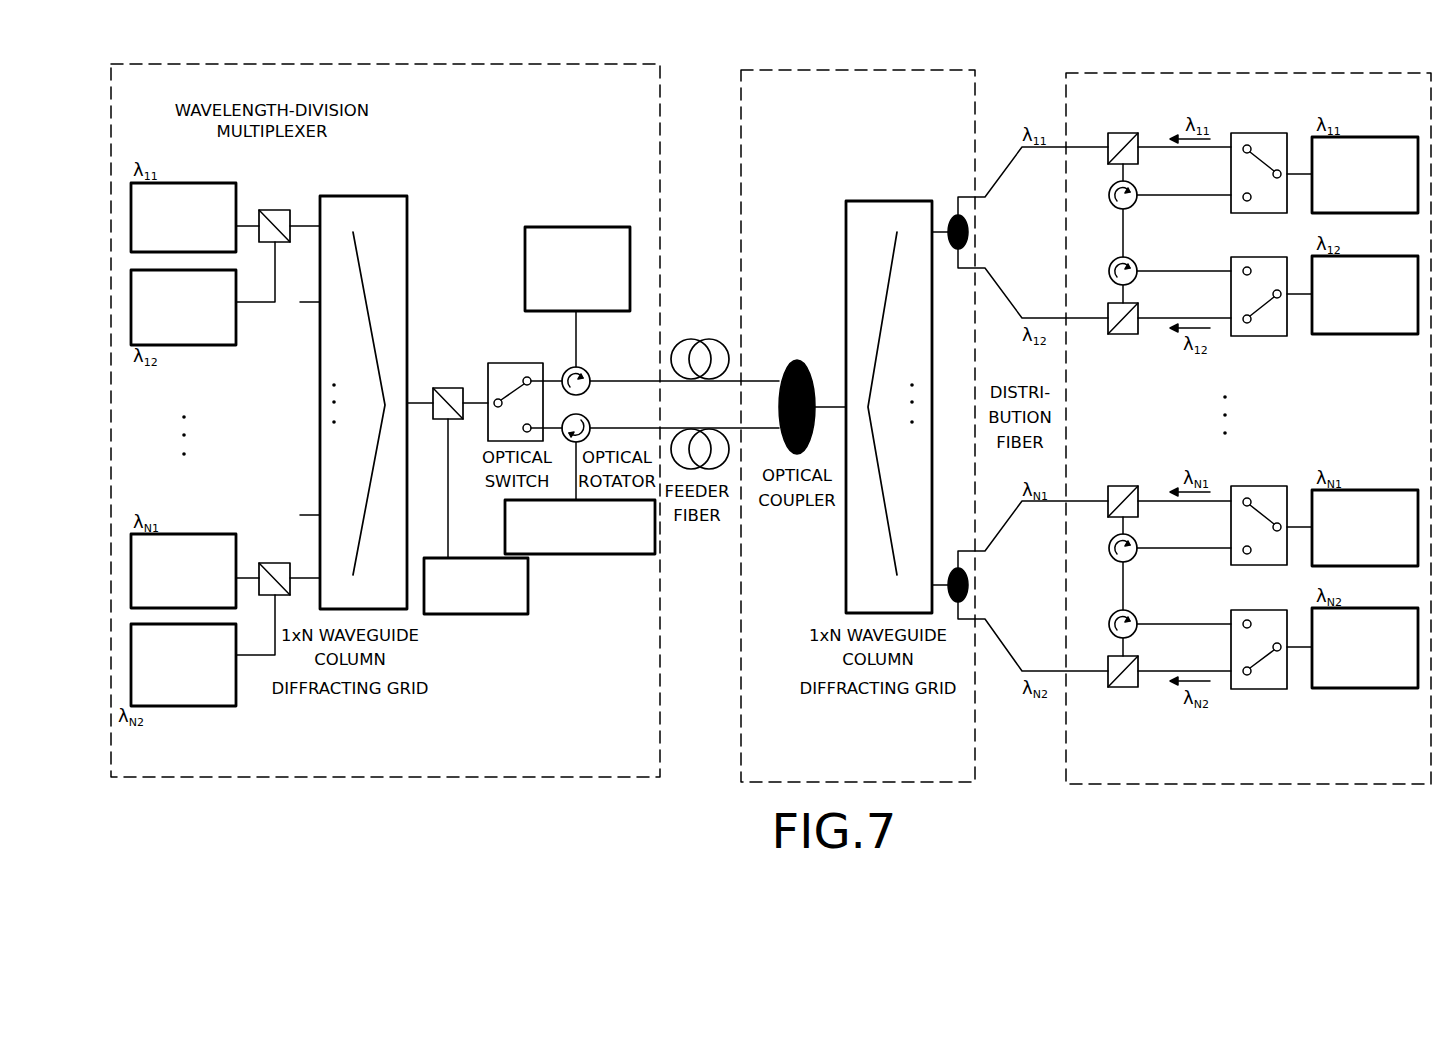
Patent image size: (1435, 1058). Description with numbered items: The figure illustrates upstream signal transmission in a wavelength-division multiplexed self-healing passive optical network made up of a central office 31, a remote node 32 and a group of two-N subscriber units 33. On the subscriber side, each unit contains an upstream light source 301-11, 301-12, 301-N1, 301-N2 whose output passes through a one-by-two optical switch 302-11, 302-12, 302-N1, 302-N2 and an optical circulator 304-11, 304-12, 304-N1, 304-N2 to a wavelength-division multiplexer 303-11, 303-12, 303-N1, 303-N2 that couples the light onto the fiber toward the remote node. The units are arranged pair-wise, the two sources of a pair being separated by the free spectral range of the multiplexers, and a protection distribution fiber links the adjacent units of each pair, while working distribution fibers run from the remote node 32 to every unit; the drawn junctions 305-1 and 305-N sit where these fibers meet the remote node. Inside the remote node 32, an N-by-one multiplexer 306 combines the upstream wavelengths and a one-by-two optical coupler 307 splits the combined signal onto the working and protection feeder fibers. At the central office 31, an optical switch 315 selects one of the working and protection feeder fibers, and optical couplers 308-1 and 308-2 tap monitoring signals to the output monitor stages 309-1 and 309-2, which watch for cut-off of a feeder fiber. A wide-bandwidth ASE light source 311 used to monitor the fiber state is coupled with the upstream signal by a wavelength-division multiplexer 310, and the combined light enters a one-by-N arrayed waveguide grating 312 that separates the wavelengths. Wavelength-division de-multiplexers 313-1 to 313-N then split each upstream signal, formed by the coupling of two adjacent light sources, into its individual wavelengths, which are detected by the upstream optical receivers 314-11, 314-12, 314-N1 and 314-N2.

The central office 31 is at (387, 64).
The remote node 32 is at (905, 70).
The subscriber units 33 is at (1291, 73).
The upstream light source 301-11 is at (1365, 137).
The upstream light source 301-12 is at (1365, 334).
The upstream light source 301-N1 is at (1365, 490).
The upstream light source 301-N2 is at (1365, 688).
The 1×2 optical switch 302-11 is at (1262, 133).
The 1×2 optical switch 302-12 is at (1260, 336).
The 1×2 optical switch 302-N1 is at (1262, 486).
The 1×2 optical switch 302-N2 is at (1260, 689).
The wavelength-division multiplexer 303-11 is at (1123, 133).
The wavelength-division multiplexer 303-12 is at (1123, 334).
The wavelength-division multiplexer 303-N1 is at (1123, 486).
The wavelength-division multiplexer 303-N2 is at (1123, 687).
The optical circulator 304-11 is at (1134, 190).
The optical circulator 304-12 is at (1137, 278).
The optical circulator 304-N1 is at (1134, 543).
The optical circulator 304-N2 is at (1137, 631).
The optical coupler 305-1 is at (968, 232).
The optical coupler 305-N is at (968, 585).
The N×1 multiplexer 306 is at (891, 197).
The 1×2 optical coupler 307 is at (797, 358).
The optical coupler 308-1 is at (596, 375).
The optical coupler 308-2 is at (601, 419).
The output monitor stage 309-1 is at (578, 223).
The output monitor stage 309-2 is at (602, 554).
The wavelength-division multiplexer 310 is at (448, 388).
The ASE light source 311 is at (474, 614).
The 1×N arrayed waveguide grating 312 is at (363, 196).
The wavelength-division de-multiplexer 313-1 is at (275, 210).
The wavelength-division de-multiplexer 313-N is at (275, 560).
The upstream optical receiver 314-11 is at (184, 183).
The upstream optical receiver 314-12 is at (201, 345).
The upstream optical receiver 314-N1 is at (182, 534).
The upstream optical receiver 314-N2 is at (182, 706).
The optical switch 315 is at (515, 363).